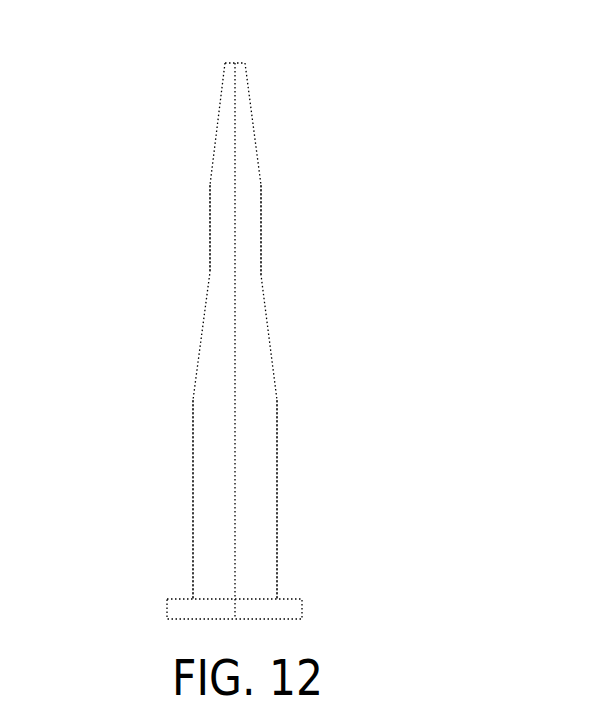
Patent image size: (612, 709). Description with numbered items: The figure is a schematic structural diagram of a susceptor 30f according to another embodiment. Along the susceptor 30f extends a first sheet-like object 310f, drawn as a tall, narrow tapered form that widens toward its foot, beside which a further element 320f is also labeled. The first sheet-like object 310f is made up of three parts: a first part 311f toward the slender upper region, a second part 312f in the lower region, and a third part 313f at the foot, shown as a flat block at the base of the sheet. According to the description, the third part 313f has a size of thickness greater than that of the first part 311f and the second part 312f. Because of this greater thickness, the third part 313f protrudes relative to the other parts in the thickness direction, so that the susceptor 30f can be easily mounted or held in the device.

The susceptor 30f is at (242, 324).
The first sheet-like object 310f is at (276, 133).
The second portion 320f is at (196, 135).
The first part 311f is at (302, 230).
The second part 312f is at (301, 490).
The third part 313f is at (299, 621).